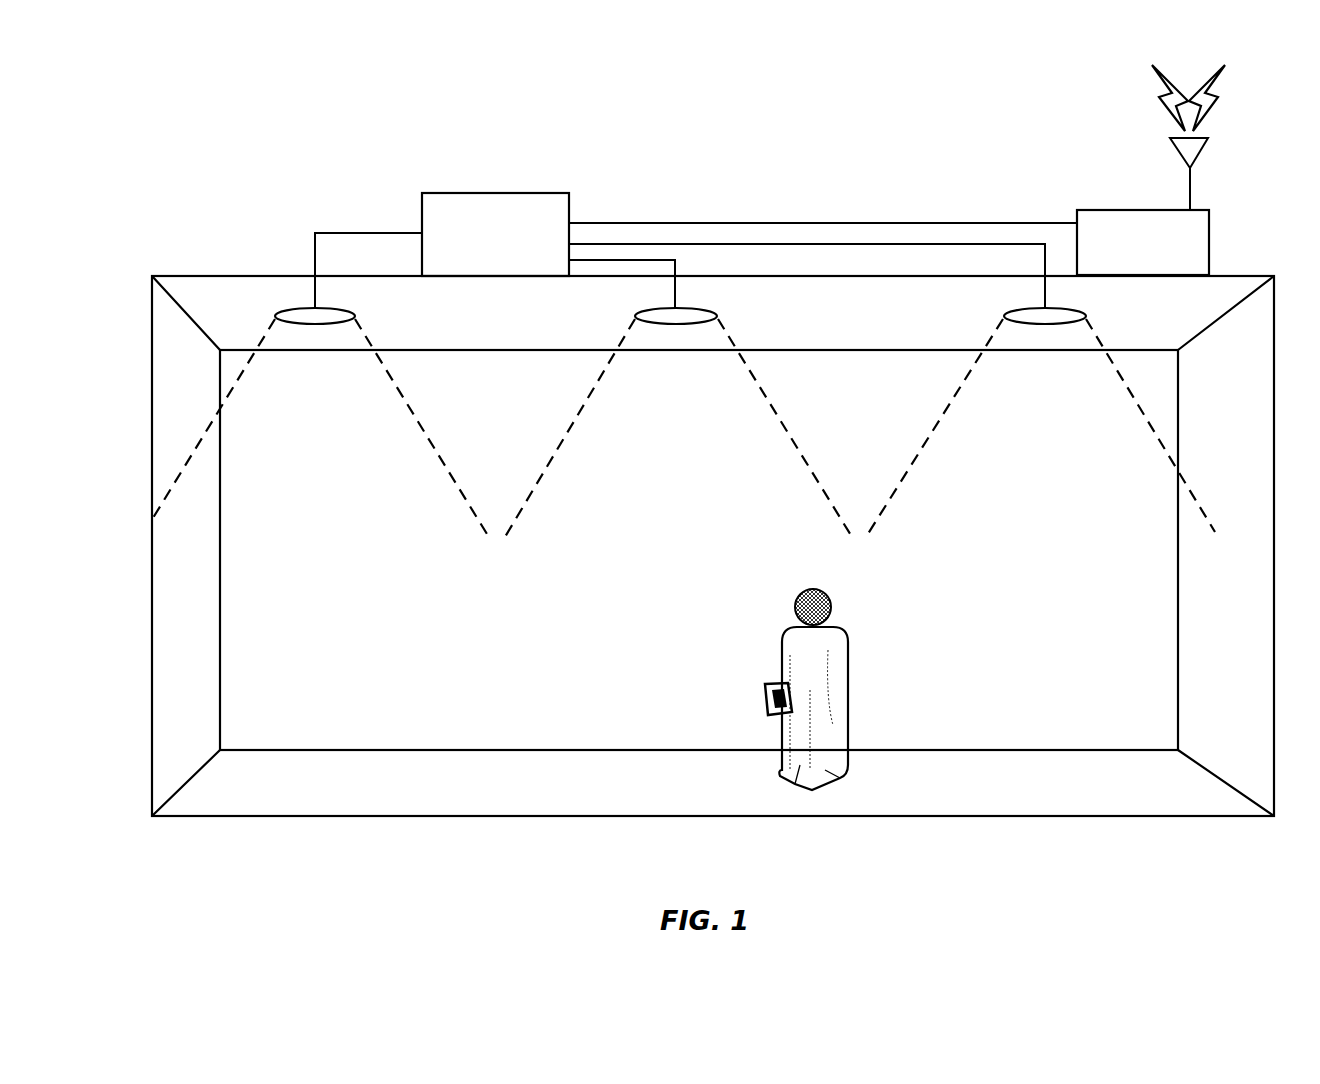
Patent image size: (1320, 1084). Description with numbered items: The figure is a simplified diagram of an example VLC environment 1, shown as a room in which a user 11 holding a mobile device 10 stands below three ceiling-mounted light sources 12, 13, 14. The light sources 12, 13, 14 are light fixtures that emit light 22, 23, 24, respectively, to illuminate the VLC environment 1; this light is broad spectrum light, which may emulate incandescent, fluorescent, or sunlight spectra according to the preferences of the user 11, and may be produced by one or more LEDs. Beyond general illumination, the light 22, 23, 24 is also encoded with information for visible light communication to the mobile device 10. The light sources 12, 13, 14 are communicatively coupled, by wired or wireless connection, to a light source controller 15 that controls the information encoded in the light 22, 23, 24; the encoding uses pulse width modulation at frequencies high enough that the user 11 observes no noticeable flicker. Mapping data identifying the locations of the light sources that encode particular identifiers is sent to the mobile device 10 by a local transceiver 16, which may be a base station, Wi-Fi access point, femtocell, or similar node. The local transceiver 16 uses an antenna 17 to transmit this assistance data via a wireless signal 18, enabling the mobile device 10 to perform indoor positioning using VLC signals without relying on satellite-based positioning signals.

The VLC environment 1 is at (225, 241).
The mobile device 10 is at (764, 690).
The user 11 is at (816, 588).
The light source 12 is at (279, 310).
The light source 13 is at (636, 312).
The light source 14 is at (1008, 311).
The light source controller 15 is at (696, 250).
The local transceiver 16 is at (1143, 221).
The antenna 17 is at (1204, 143).
The wireless signal 18 is at (1160, 104).
The light 22 is at (400, 392).
The light 23 is at (755, 392).
The light 24 is at (1126, 391).